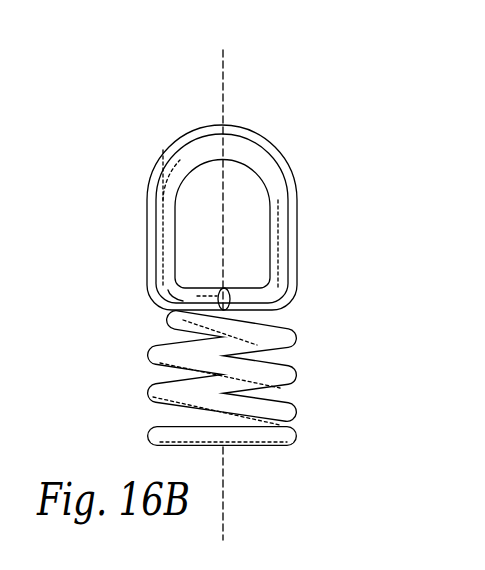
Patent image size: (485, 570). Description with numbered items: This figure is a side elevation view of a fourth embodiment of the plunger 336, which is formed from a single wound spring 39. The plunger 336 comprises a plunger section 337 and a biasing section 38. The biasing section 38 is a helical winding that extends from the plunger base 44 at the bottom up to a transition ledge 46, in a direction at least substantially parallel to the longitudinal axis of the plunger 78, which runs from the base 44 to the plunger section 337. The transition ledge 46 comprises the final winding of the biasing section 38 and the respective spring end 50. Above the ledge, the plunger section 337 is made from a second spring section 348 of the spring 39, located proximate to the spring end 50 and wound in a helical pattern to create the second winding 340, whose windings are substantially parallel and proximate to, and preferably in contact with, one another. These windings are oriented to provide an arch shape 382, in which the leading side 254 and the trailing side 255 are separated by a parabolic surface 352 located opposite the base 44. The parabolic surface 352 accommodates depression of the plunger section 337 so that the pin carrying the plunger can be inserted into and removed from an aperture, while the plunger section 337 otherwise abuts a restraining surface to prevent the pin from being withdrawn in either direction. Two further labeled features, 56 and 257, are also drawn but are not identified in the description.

The longitudinal axis of the plunger 78 is at (221, 64).
The plunger 336 is at (200, 112).
The head body 56 is at (173, 140).
The second spring section 348 is at (234, 147).
The parabolic surface 352 is at (237, 147).
The plunger section 337 is at (291, 153).
The arch shape 382 is at (158, 185).
The second winding 340 is at (282, 204).
The plunger section trailing side 255 is at (299, 223).
The lower surface 257 is at (291, 261).
The plunger section leading side 254 is at (148, 253).
The biasing section 38 is at (290, 375).
The spring 39 is at (150, 397).
The plunger base 44 is at (243, 450).
The transition ledge 46 is at (290, 329).
The spring end 50 is at (231, 296).